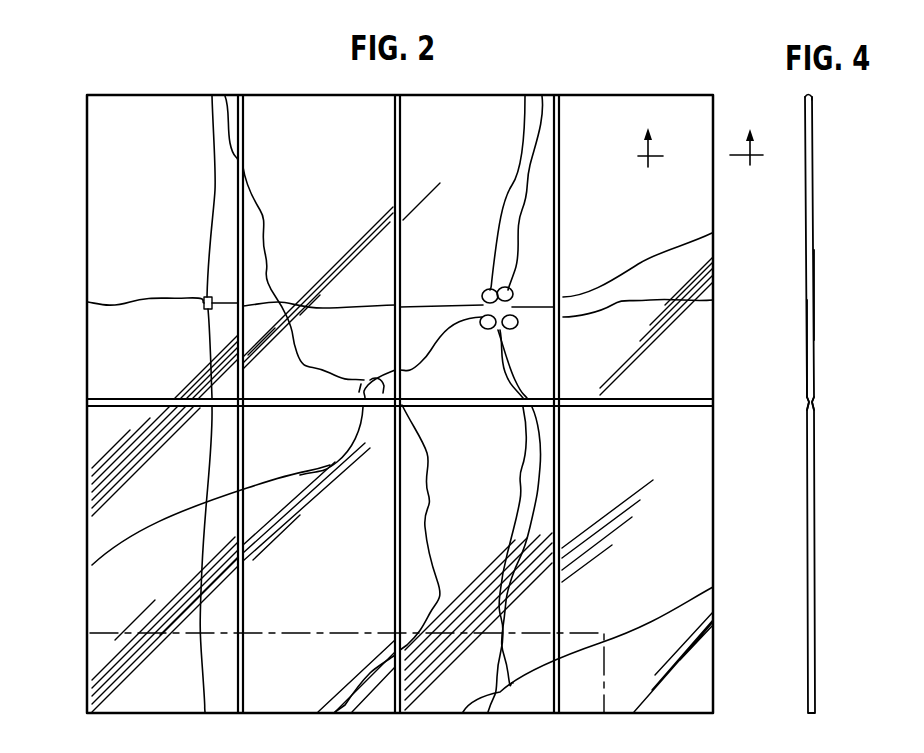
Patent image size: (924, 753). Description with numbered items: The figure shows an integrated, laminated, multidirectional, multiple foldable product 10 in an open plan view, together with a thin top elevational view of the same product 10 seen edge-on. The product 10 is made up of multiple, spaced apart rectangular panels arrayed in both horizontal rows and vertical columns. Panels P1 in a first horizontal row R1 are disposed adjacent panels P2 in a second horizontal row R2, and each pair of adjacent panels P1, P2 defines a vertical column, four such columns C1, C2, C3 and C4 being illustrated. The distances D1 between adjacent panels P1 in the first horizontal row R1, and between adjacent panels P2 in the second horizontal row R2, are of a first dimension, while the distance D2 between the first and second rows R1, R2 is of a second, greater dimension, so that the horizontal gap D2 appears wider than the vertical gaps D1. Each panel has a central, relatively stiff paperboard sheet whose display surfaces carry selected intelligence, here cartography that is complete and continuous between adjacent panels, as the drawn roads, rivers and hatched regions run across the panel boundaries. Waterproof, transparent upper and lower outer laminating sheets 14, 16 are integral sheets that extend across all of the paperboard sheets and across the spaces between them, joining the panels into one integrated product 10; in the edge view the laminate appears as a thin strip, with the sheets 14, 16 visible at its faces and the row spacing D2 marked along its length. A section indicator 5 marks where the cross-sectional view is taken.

In FIG. 2, the integrated laminated multidirectional multiple foldable product 10 is at (703, 78).
In FIG. 4, the integrated laminated multidirectional multiple foldable product 10 is at (789, 253).
In FIG. 4, the upper outer laminating sheet 14 is at (806, 384).
In FIG. 4, the lower outer laminating sheet 16 is at (815, 294).
In FIG. 2, the section line 5 is at (654, 137).
In FIG. 4, the section line 5 is at (751, 136).
In FIG. 2, the distance between adjacent panels in a row D1 is at (261, 67).
In FIG. 2, the distance between the first and second rows D2 is at (85, 399).
In FIG. 4, the distance between the first and second rows D2 is at (806, 404).
In FIG. 2, the first vertical column C1 is at (168, 87).
In FIG. 2, the second vertical column C2 is at (316, 87).
In FIG. 2, the third vertical column C3 is at (471, 87).
In FIG. 2, the fourth vertical column C4 is at (650, 87).
In FIG. 2, the panels in the first horizontal row P1 is at (157, 245).
In FIG. 2, the panels in the second horizontal row P2 is at (160, 582).
In FIG. 2, the first horizontal row R1 is at (78, 290).
In FIG. 2, the second horizontal row R2 is at (78, 538).